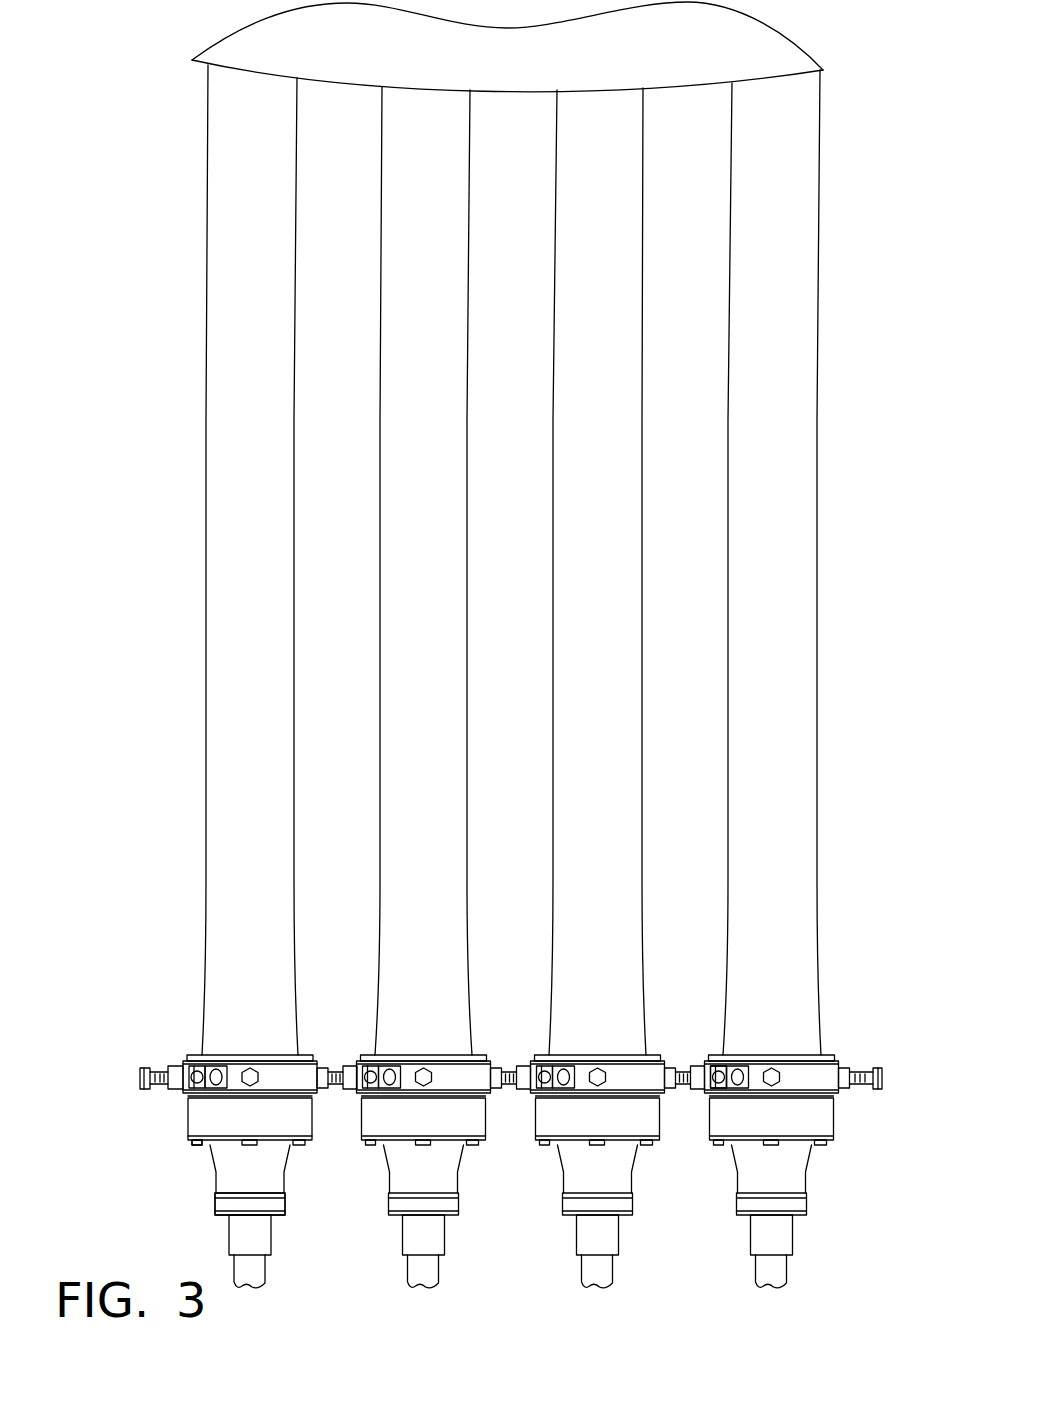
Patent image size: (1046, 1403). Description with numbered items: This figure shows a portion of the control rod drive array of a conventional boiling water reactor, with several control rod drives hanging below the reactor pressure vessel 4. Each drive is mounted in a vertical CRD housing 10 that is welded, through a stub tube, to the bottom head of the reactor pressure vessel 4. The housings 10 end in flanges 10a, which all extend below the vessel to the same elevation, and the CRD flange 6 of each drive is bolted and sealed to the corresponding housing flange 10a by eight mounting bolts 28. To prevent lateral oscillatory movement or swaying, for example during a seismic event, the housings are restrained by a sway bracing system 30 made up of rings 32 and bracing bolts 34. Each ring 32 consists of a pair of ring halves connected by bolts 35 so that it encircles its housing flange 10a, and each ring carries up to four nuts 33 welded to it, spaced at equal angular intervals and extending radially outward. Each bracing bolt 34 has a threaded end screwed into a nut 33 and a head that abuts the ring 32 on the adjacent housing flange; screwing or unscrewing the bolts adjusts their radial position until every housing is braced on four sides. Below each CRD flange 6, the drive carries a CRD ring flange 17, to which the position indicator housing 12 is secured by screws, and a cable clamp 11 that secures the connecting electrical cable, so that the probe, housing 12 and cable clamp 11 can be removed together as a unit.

The reactor pressure vessel 4 is at (442, 78).
The CRD housing 10 is at (220, 421).
The CRD housing flange 10a is at (480, 1057).
The sway bracing system 30 is at (217, 1129).
The ring 32 is at (305, 1065).
The nut 33 is at (323, 1092).
The bracing bolt 34 is at (138, 1074).
The bolt 35 is at (745, 1062).
The CRD flange 6 is at (197, 1112).
The mounting bolt 28 is at (196, 1144).
The CRD ring flange 17 is at (275, 1200).
The housing 12 is at (233, 1238).
The cable clamp 11 is at (255, 1264).